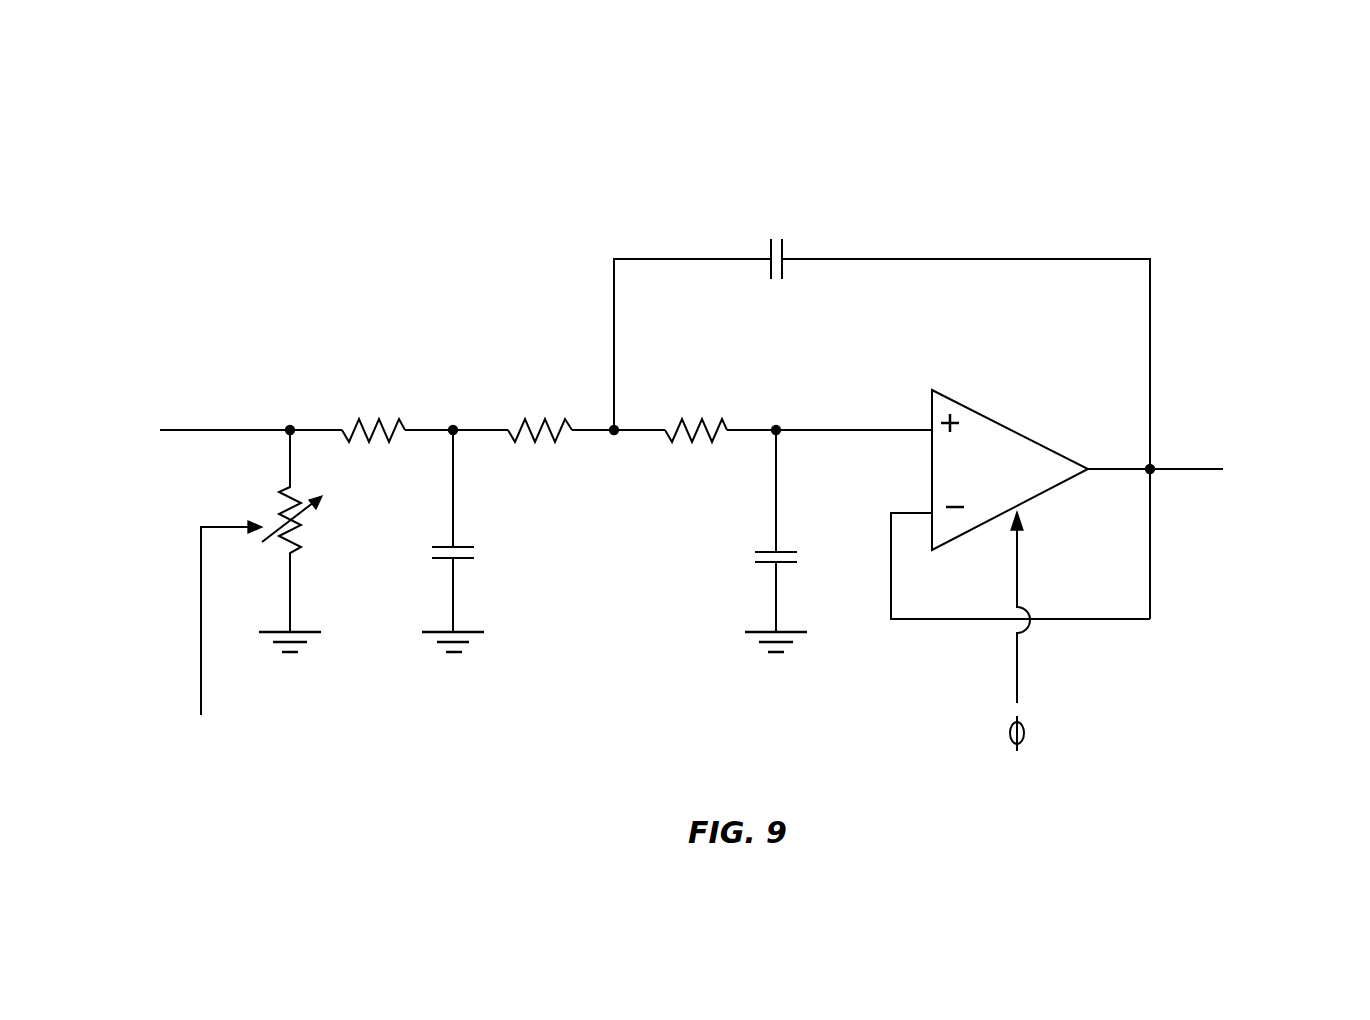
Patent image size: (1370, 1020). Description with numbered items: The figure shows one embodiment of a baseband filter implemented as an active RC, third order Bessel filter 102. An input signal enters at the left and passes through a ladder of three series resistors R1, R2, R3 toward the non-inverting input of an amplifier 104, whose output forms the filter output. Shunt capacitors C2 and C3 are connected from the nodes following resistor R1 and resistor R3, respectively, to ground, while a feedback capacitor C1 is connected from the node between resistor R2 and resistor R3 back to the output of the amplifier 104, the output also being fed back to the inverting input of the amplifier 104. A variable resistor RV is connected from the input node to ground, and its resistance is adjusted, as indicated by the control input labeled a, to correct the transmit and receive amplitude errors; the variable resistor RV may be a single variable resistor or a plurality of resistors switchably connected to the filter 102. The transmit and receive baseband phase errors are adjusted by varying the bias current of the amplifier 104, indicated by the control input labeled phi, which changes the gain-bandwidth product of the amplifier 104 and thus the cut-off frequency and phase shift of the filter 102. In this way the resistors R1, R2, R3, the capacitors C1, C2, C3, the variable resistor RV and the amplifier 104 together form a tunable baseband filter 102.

The active RC third order Bessel filter 102 is at (708, 407).
The amplifier 104 is at (1015, 433).
The resistor R1 is at (373, 413).
The resistor R2 is at (540, 413).
The resistor R3 is at (696, 413).
The variable resistor RV is at (276, 531).
The capacitor C1 is at (882, 407).
The capacitor C2 is at (471, 541).
The capacitor C3 is at (793, 541).